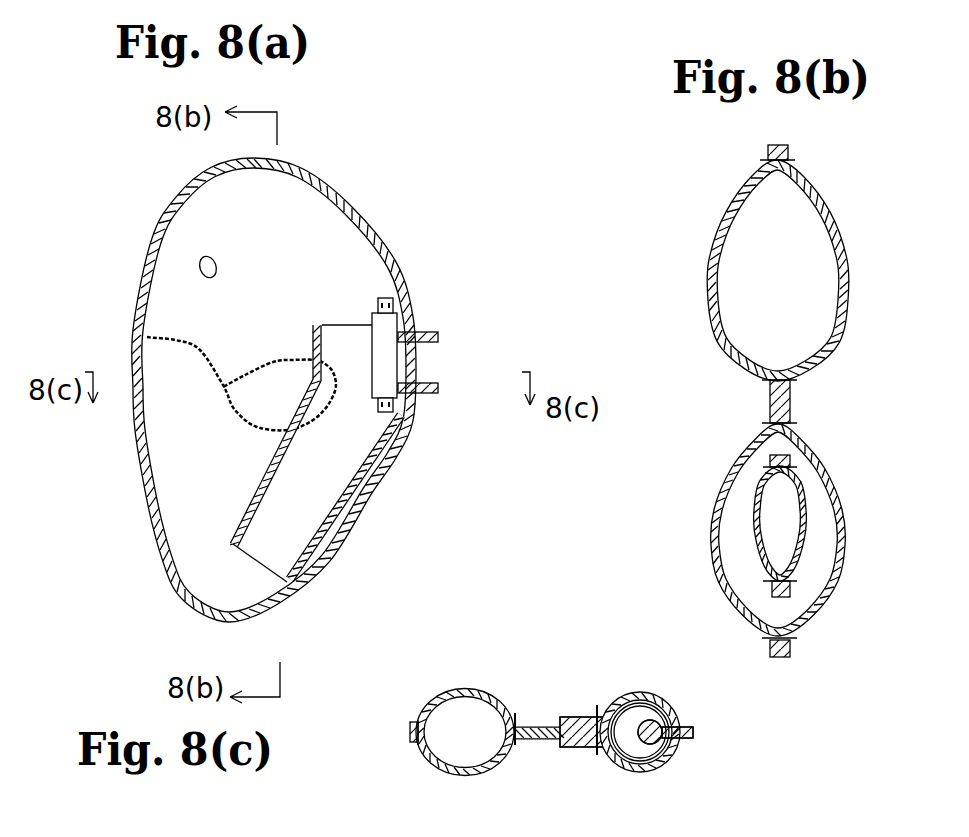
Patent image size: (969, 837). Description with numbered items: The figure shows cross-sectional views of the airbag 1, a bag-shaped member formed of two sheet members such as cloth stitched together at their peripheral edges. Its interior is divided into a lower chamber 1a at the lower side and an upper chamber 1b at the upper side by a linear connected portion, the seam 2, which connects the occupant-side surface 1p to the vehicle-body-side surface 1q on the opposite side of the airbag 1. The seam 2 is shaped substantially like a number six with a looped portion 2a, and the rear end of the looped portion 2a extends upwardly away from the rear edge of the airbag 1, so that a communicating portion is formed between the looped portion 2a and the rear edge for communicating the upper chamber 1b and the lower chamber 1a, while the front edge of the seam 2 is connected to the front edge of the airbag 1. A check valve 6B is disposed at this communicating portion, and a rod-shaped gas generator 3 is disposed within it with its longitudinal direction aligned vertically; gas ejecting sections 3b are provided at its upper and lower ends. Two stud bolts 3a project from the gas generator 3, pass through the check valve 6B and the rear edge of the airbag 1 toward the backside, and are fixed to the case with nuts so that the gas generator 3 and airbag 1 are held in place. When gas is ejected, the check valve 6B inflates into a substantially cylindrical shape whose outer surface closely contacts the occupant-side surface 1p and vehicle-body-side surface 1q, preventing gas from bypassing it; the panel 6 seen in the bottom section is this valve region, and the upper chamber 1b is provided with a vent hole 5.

In FIG. 8A, the airbag 1 is at (123, 240).
In FIG. 8B, the airbag 1 is at (832, 200).
In FIG. 8C, the airbag 1 is at (380, 752).
In FIG. 8A, the lower chamber 1a is at (172, 467).
In FIG. 8B, the lower chamber 1a is at (822, 548).
In FIG. 8A, the upper chamber 1b is at (261, 213).
In FIG. 8B, the upper chamber 1b is at (793, 247).
In FIG. 8B, the occupant-side surface 1p is at (686, 283).
In FIG. 8B, the vehicle-body-side surface 1q is at (869, 284).
In FIG. 8A, the seam 2 is at (200, 352).
In FIG. 8B, the seam 2 is at (795, 380).
In FIG. 8C, the seam 2 is at (516, 718).
In FIG. 8A, the looped portion 2a is at (278, 360).
In FIG. 8B, the looped portion 2a is at (795, 423).
In FIG. 8C, the looped portion 2a is at (597, 705).
In FIG. 8A, the gas generator 3 is at (417, 316).
In FIG. 8C, the gas generator 3 is at (648, 720).
In FIG. 8A, the stud bolts 3a is at (436, 333).
In FIG. 8C, the stud bolts 3a is at (694, 733).
In FIG. 8A, the gas ejecting sections 3b is at (393, 302).
In FIG. 8A, the vent hole 5 is at (200, 272).
In FIG. 8C, the panel 6 is at (618, 748).
In FIG. 8A, the check valve 6B is at (352, 507).
In FIG. 8B, the check valve 6B is at (805, 515).